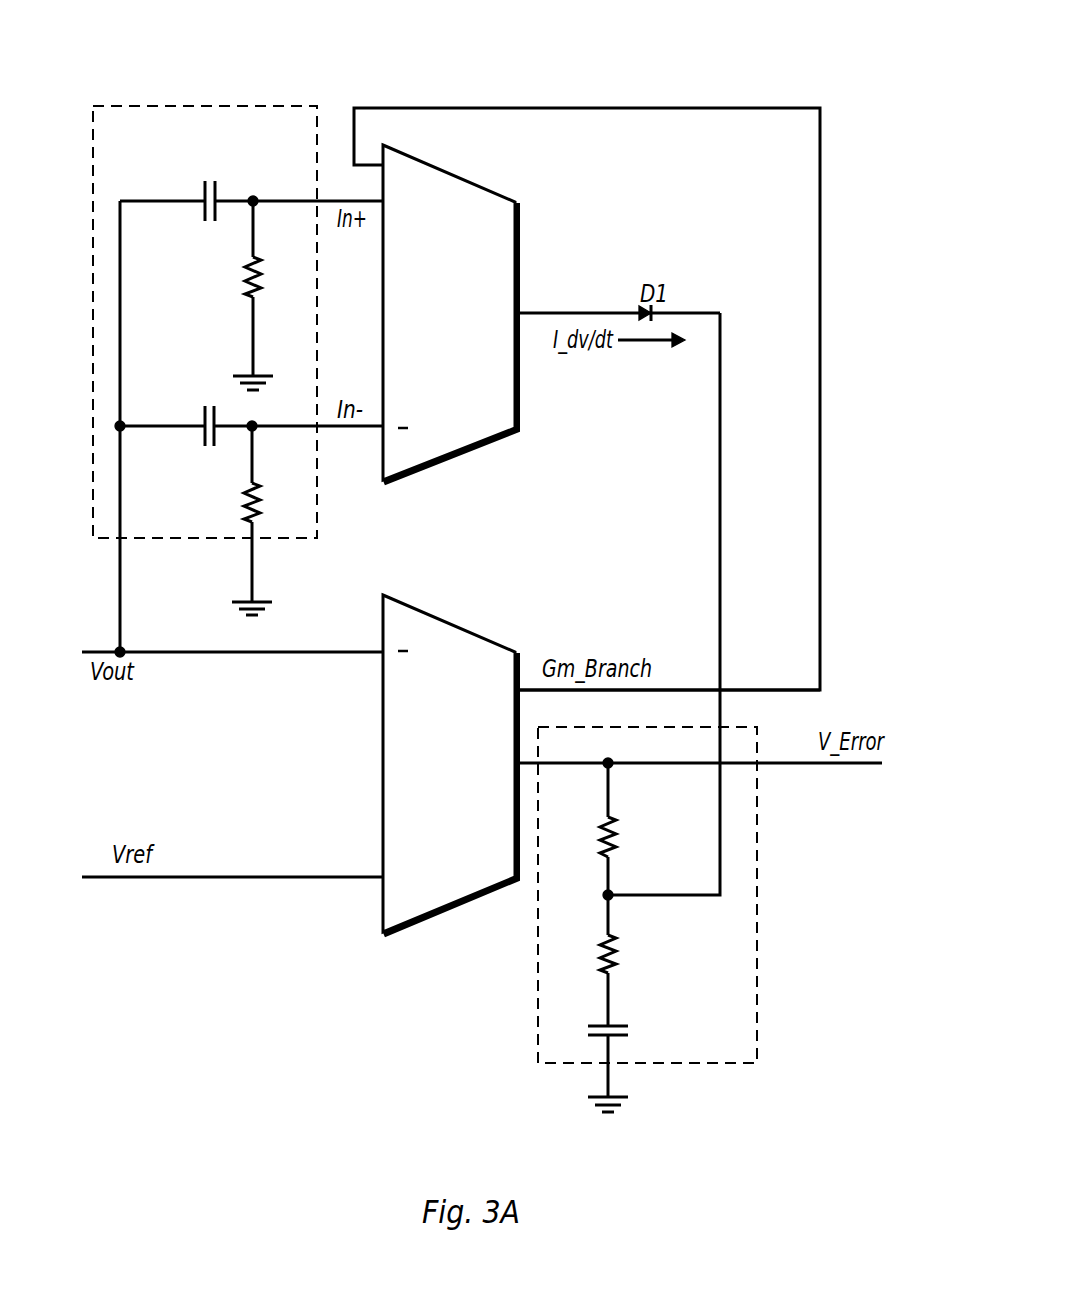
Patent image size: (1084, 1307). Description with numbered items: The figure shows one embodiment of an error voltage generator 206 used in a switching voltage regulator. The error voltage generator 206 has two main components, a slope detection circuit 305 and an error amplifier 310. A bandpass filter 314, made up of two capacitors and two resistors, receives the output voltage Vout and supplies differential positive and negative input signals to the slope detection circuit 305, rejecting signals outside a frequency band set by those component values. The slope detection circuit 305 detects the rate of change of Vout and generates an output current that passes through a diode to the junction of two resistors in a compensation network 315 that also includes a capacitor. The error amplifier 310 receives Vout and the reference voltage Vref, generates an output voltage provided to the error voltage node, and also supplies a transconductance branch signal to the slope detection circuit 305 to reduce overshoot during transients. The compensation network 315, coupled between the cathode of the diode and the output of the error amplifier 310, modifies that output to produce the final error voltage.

The error voltage generator 206 is at (677, 40).
The bandpass filter 314 is at (295, 136).
The slope detection circuit 305 is at (432, 371).
The error amplifier 310 is at (432, 807).
The compensation network 315 is at (757, 1063).